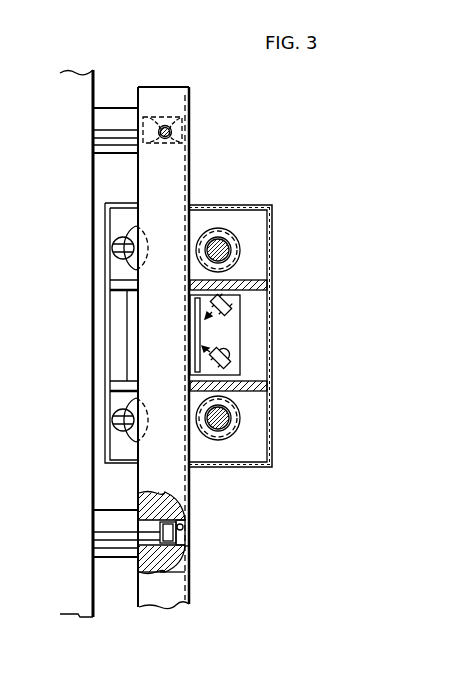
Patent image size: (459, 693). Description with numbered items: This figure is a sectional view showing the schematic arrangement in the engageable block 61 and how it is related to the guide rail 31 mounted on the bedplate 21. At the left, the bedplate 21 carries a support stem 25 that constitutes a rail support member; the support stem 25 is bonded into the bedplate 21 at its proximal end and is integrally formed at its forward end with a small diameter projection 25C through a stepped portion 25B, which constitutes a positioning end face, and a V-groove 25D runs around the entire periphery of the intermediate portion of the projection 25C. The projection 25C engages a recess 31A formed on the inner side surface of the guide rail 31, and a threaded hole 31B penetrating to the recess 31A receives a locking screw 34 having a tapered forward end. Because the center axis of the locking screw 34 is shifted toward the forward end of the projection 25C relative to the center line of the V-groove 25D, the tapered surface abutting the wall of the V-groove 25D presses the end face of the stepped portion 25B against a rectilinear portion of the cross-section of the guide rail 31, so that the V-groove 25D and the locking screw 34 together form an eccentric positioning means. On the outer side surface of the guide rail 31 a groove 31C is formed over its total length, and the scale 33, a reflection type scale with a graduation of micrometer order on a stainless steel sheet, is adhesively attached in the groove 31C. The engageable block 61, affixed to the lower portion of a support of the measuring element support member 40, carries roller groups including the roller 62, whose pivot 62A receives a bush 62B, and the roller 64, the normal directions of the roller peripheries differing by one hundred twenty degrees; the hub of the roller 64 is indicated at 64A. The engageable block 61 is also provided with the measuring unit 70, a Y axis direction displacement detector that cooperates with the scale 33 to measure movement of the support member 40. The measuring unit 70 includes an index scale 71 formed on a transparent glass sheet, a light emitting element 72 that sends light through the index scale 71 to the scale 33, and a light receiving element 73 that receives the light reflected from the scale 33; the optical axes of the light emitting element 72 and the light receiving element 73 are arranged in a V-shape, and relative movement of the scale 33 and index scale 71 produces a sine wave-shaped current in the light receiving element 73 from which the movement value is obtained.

The bedplate 21 is at (70, 92).
The support stem 25 is at (118, 118).
The stepped portion 25B is at (150, 573).
The small diameter projection 25C is at (193, 552).
The V-groove 25D is at (173, 567).
The guide rail 31 is at (190, 90).
The recess 31A is at (187, 527).
The threaded hole 31B is at (175, 125).
The groove 31C is at (192, 478).
The scale 33 is at (188, 537).
The locking screw 34 is at (172, 132).
The measuring element support member 40 is at (214, 203).
The engageable block 61 is at (260, 282).
The roller 62 is at (216, 227).
The pivot 62A is at (235, 250).
The bush 62B is at (231, 230).
The roller 64 is at (128, 231).
The roller hub 64A is at (120, 258).
The measuring unit 70 is at (241, 325).
The index scale 71 is at (203, 332).
The light emitting element 72 is at (230, 361).
The light receiving element 73 is at (230, 302).